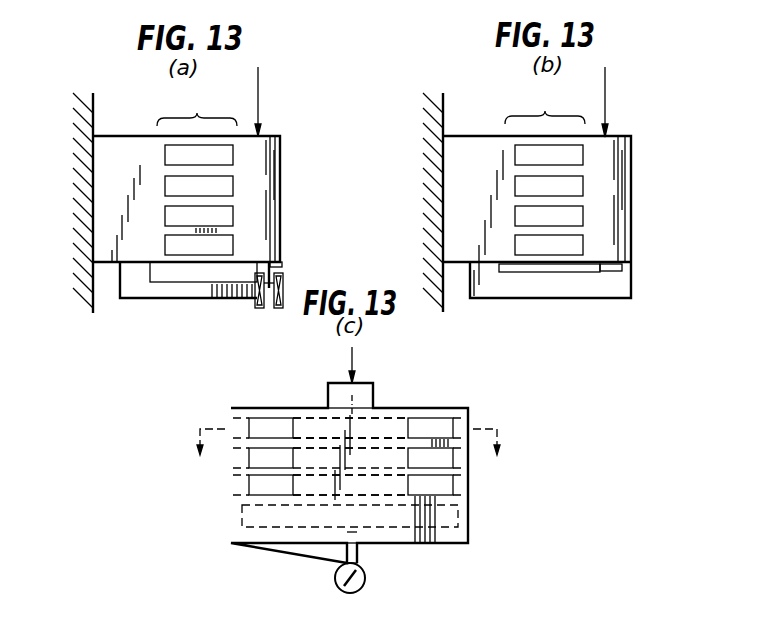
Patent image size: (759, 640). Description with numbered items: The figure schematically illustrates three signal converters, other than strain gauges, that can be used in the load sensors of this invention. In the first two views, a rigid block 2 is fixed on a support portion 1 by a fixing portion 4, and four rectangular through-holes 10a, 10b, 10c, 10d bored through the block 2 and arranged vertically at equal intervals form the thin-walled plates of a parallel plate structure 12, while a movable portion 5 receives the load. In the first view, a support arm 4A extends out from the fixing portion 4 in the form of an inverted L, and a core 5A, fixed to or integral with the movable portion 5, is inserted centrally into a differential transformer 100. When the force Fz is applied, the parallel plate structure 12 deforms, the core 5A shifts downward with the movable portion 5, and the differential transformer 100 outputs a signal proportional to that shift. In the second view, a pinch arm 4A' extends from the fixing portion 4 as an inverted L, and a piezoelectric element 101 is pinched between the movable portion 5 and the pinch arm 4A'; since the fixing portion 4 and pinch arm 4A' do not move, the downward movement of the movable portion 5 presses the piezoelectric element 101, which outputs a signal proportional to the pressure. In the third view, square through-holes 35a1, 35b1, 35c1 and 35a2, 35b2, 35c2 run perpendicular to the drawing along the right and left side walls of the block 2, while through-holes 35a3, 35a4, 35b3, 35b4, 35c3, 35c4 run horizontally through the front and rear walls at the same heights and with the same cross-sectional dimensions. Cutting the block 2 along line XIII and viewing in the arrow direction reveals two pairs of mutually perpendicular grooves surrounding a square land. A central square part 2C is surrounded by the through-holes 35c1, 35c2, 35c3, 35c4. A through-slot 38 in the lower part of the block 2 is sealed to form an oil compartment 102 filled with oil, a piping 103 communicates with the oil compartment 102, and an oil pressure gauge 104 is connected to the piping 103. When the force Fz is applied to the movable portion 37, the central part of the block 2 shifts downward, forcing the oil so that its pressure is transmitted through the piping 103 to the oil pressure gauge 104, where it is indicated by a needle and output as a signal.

In FIG. 13A, the support portion 1 is at (77, 160).
In FIG. 13B, the support portion 1 is at (433, 162).
In FIG. 13A, the rigid block 2 is at (270, 137).
In FIG. 13B, the rigid block 2 is at (618, 138).
In FIG. 13C, the rigid block 2 is at (468, 527).
In FIG. 13C, the central square part 2C is at (373, 487).
In FIG. 13A, the fixing portion 4 is at (118, 163).
In FIG. 13B, the fixing portion 4 is at (470, 150).
In FIG. 13A, the support arm 4A is at (196, 298).
In FIG. 13B, the pinch arm 4A' is at (549, 301).
In FIG. 13A, the movable portion 5 is at (273, 172).
In FIG. 13B, the movable portion 5 is at (620, 170).
In FIG. 13A, the core 5A is at (283, 267).
In FIG. 13A, the rectangular through-hole 10a is at (232, 150).
In FIG. 13B, the rectangular through-hole 10a is at (582, 150).
In FIG. 13A, the rectangular through-hole 10b is at (232, 181).
In FIG. 13B, the rectangular through-hole 10b is at (582, 181).
In FIG. 13A, the rectangular through-hole 10c is at (232, 211).
In FIG. 13B, the rectangular through-hole 10c is at (582, 211).
In FIG. 13A, the rectangular through-hole 10d is at (232, 241).
In FIG. 13B, the rectangular through-hole 10d is at (582, 241).
In FIG. 13A, the parallel plate structure 12 is at (197, 162).
In FIG. 13B, the parallel plate structure 12 is at (545, 107).
In FIG. 13A, the differential transformer 100 is at (270, 308).
In FIG. 13B, the piezoelectric element 101 is at (622, 268).
In FIG. 13C, the oil compartment 102 is at (433, 520).
In FIG. 13C, the piping 103 is at (350, 532).
In FIG. 13C, the oil pressure gauge 104 is at (364, 586).
In FIG. 13C, the square through-hole 35a1 is at (449, 421).
In FIG. 13C, the square through-hole 35a2 is at (252, 423).
In FIG. 13C, the through-hole 35a3 is at (397, 417).
In FIG. 13C, the through-hole 35a4 is at (423, 396).
In FIG. 13C, the square through-hole 35b1 is at (449, 453).
In FIG. 13C, the square through-hole 35b2 is at (252, 452).
In FIG. 13C, the through-hole 35b3 is at (317, 447).
In FIG. 13C, the through-hole 35b4 is at (338, 405).
In FIG. 13C, the square through-hole 35c1 is at (449, 482).
In FIG. 13C, the square through-hole 35c2 is at (252, 480).
In FIG. 13C, the through-hole 35c3 is at (309, 487).
In FIG. 13C, the through-hole 35c4 is at (304, 545).
In FIG. 13C, the movable portion 37 is at (363, 390).
In FIG. 13C, the through-slot 38 is at (243, 515).
In FIG. 13A, the force Fz is at (262, 92).
In FIG. 13B, the force Fz is at (608, 88).
In FIG. 13C, the force Fz is at (353, 362).
In FIG. 13C, the section line XIII is at (348, 429).